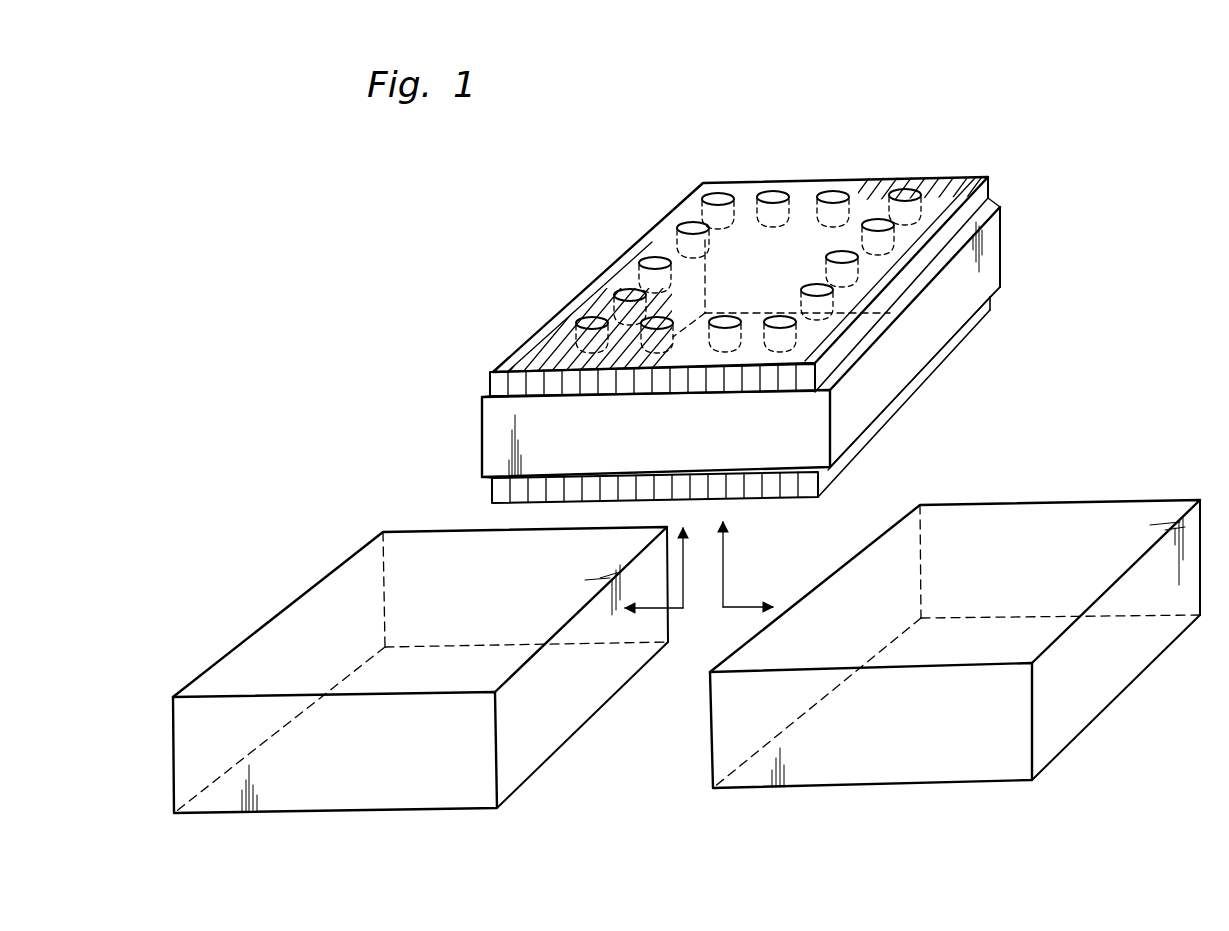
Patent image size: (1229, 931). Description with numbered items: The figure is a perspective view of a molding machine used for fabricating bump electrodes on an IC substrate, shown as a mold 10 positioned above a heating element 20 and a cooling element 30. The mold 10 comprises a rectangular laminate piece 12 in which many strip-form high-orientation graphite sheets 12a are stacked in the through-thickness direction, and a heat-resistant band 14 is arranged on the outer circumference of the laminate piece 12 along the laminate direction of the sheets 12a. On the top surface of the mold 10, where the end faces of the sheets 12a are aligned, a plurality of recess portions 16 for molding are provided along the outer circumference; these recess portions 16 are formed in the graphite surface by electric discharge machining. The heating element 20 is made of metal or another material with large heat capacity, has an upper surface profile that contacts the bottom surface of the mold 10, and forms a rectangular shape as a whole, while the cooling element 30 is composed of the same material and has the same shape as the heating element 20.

The mold 10 is at (753, 309).
The rectangular laminate piece 12 is at (595, 283).
The high-orientation graphite sheets 12a is at (542, 382).
The heat-resistant band 14 is at (990, 260).
The recess portions for molding 16 is at (773, 193).
The heating element 20 is at (307, 610).
The cooling element 30 is at (1100, 517).